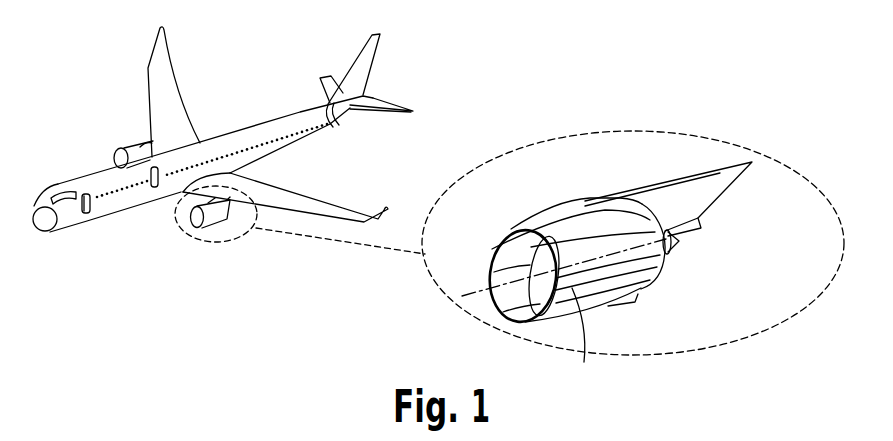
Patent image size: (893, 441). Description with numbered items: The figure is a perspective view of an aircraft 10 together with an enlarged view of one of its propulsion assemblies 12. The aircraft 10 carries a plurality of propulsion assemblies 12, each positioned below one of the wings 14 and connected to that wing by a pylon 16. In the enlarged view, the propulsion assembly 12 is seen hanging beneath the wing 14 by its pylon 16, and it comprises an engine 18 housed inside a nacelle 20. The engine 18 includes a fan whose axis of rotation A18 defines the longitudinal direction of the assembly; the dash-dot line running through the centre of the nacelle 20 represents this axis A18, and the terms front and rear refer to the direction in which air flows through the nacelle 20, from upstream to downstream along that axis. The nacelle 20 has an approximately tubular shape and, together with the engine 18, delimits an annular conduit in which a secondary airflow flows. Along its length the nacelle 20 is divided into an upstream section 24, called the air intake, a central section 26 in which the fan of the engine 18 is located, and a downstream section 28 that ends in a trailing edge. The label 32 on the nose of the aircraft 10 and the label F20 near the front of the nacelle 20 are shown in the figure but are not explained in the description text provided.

The aircraft 10 is at (99, 102).
The propulsion assembly 12 is at (114, 150).
The wing 14 is at (168, 87).
The pylon 16 is at (683, 197).
The engine 18 is at (677, 251).
The nacelle 20 is at (649, 288).
The upstream section 24 is at (515, 217).
The central section 26 is at (566, 224).
The downstream section 28 is at (633, 229).
The cockpit / nose 32 is at (70, 220).
The axis of rotation A18 is at (464, 295).
The front of nacelle F20 is at (585, 340).